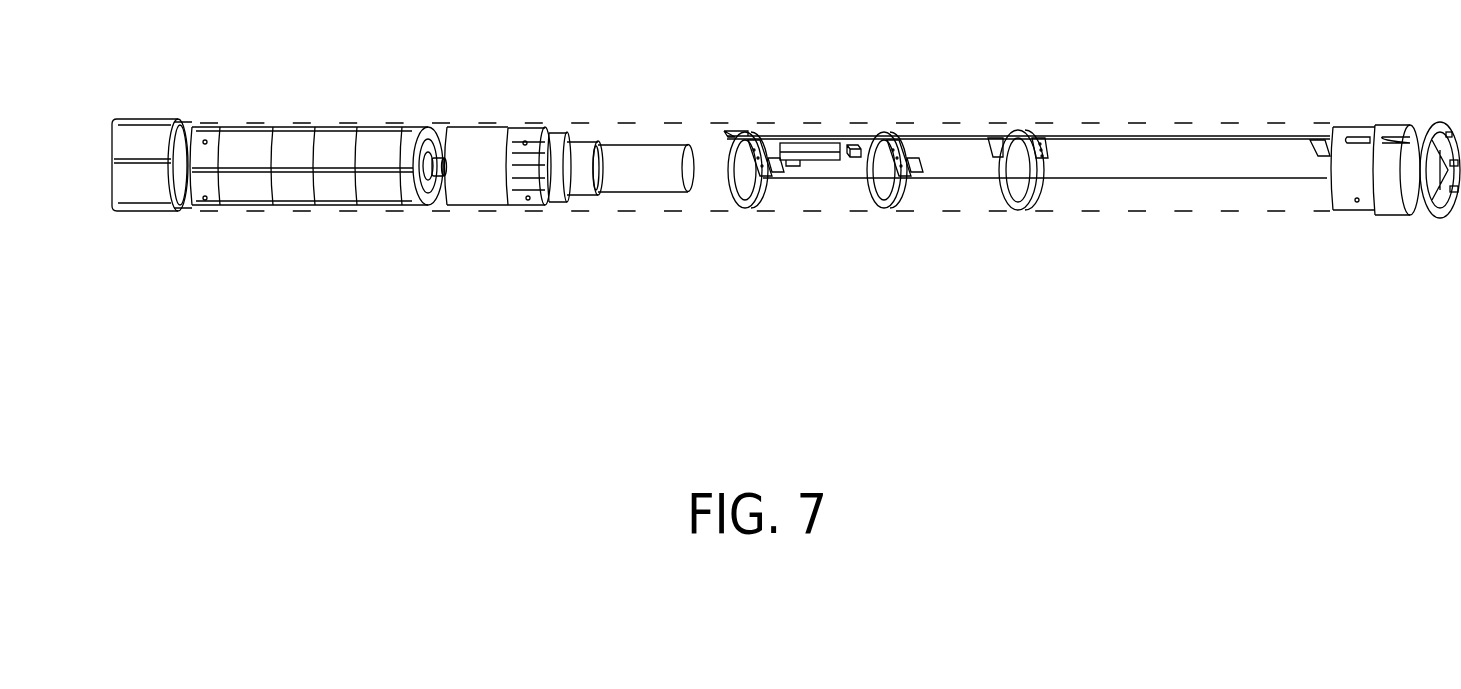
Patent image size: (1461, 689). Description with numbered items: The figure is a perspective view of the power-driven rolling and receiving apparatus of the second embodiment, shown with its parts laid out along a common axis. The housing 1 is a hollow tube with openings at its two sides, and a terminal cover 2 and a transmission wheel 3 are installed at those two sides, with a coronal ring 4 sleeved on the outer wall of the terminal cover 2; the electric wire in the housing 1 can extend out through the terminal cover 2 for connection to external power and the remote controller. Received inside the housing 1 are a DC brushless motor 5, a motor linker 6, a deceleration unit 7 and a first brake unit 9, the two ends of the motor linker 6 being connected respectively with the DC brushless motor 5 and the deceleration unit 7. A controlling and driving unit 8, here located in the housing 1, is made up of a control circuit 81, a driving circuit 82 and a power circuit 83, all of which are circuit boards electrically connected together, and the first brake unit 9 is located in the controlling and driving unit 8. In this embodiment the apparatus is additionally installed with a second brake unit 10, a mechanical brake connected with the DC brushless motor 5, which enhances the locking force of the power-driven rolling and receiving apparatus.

The housing 1 is at (1109, 127).
The terminal cover 2 is at (1435, 130).
The transmission wheel 3 is at (152, 132).
The coronal ring 4 is at (1403, 192).
The DC brushless motor 5 is at (479, 140).
The motor linker 6 is at (440, 167).
The deceleration unit 7 is at (312, 192).
The controlling and driving unit 8 is at (1105, 326).
The control circuit 81 is at (957, 172).
The driving circuit 82 is at (827, 172).
The power circuit 83 is at (1107, 173).
The first brake unit 9 is at (852, 145).
The second brake unit 10 is at (643, 157).